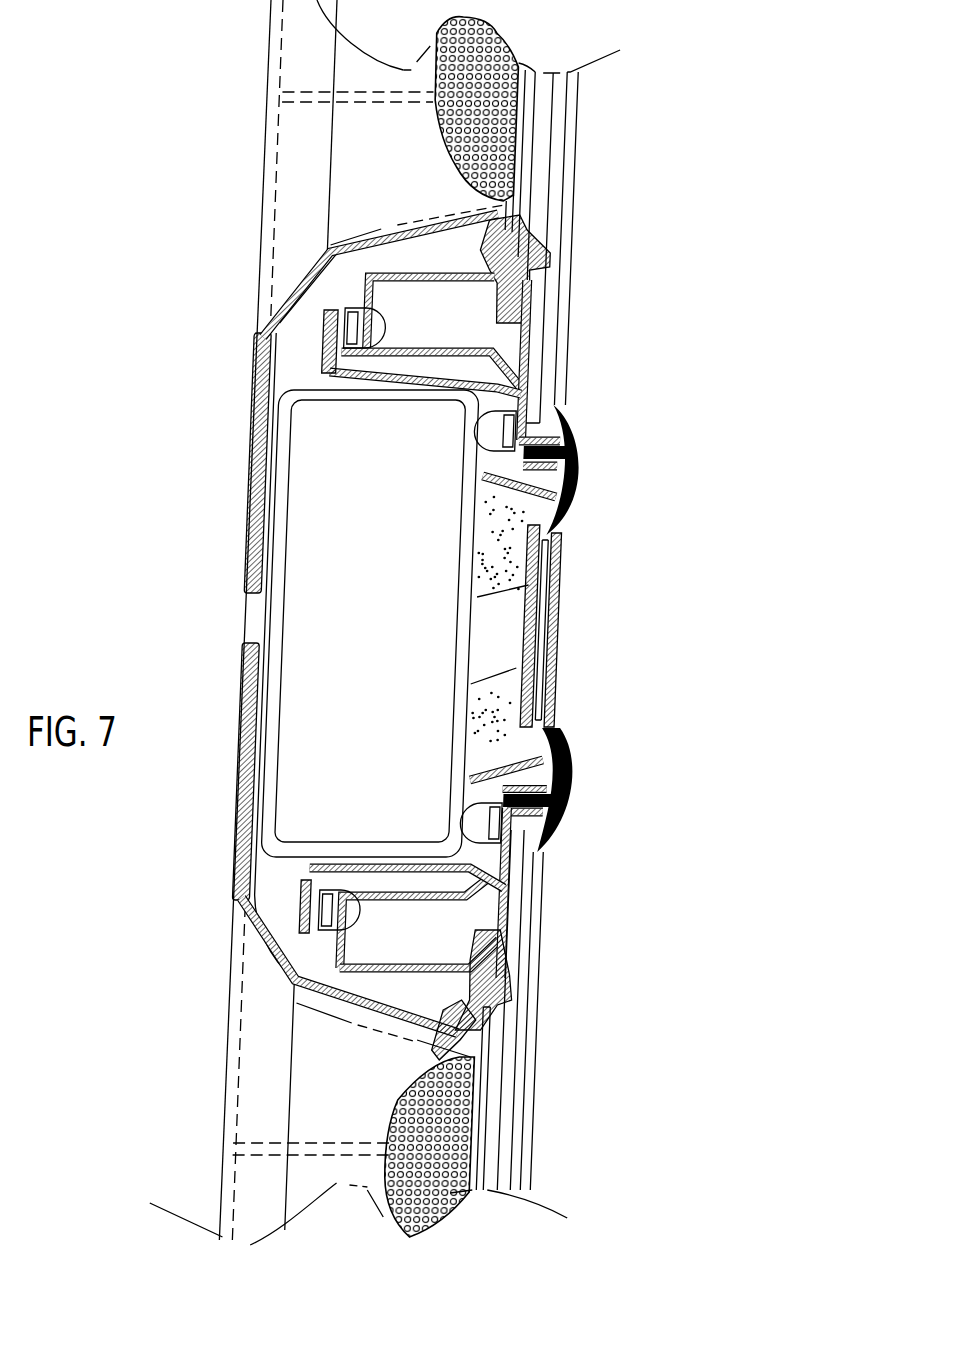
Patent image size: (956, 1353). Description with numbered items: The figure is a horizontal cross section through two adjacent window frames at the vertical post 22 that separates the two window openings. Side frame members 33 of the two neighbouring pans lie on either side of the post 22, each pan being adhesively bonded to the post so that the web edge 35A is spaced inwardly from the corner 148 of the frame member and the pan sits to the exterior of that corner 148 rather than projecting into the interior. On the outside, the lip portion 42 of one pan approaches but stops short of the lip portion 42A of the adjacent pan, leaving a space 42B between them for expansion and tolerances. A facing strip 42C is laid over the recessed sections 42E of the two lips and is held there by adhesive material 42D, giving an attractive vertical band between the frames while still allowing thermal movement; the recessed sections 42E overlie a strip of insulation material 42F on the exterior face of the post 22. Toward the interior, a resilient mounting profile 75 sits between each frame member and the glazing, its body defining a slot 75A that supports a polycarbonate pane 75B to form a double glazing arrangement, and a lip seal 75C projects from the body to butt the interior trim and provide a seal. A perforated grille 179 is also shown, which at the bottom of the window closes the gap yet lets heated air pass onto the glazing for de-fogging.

The corner of the frame member 148 is at (272, 400).
The vertical post 22 is at (282, 618).
The side frame member 33 is at (410, 380).
The edge of the web 35A is at (337, 378).
The lip portion 42 is at (550, 530).
The lip portion of the adjacent pan 42A is at (550, 733).
The space 42B is at (530, 627).
The facing strip 42C is at (560, 617).
The adhesive material 42D is at (540, 658).
The recessed sections 42E is at (530, 580).
The strip of insulation material 42F is at (483, 673).
The resilient mounting profile 75 is at (517, 978).
The slot 75A is at (513, 997).
The pane of polycarbonate 75B is at (487, 1060).
The lip seal 75C is at (402, 890).
The perforated grille 179 is at (420, 1100).